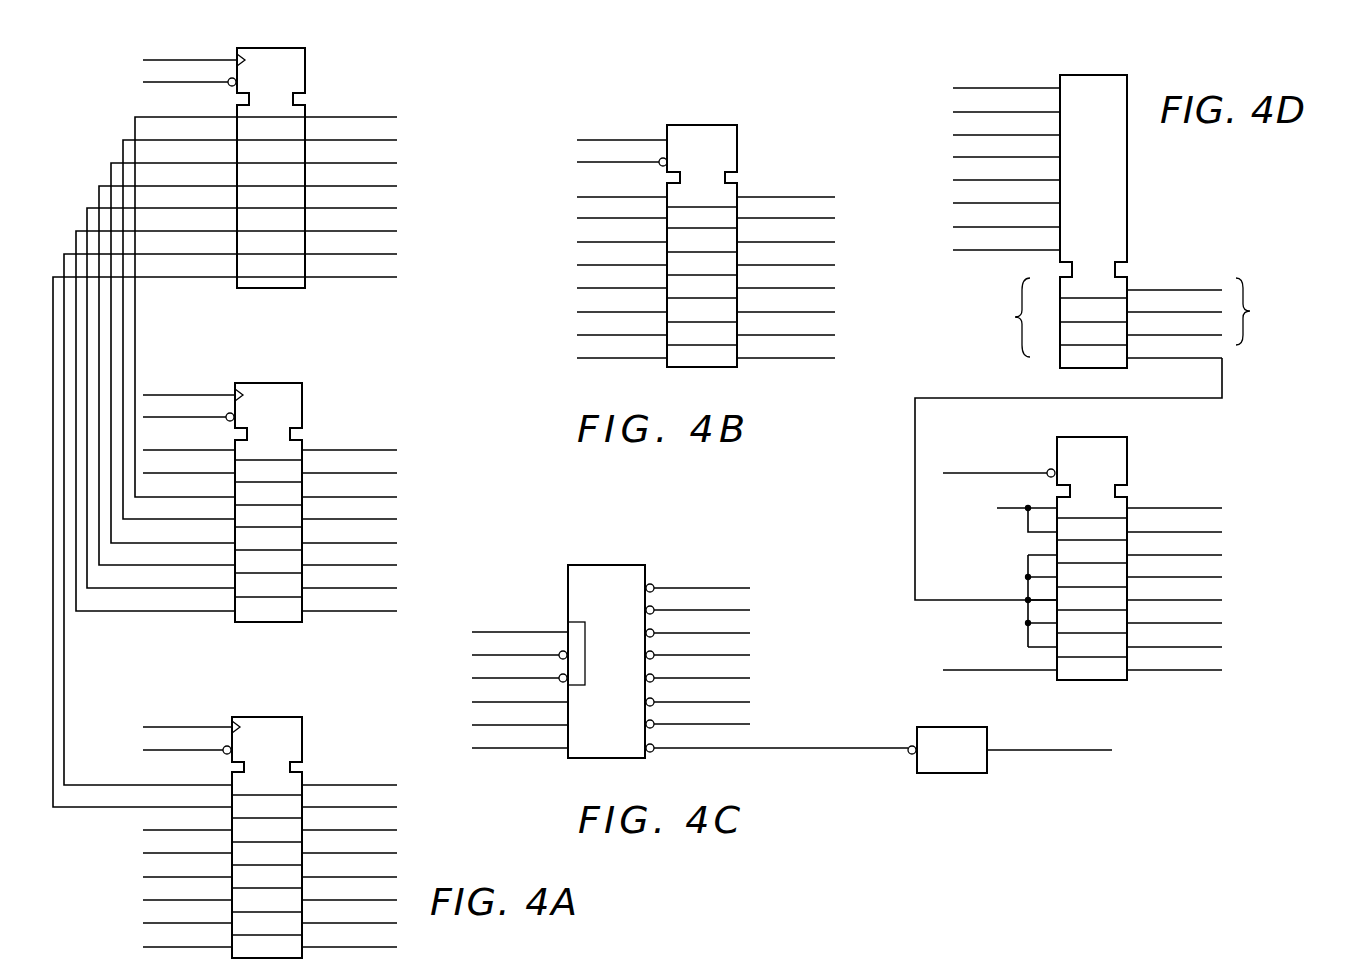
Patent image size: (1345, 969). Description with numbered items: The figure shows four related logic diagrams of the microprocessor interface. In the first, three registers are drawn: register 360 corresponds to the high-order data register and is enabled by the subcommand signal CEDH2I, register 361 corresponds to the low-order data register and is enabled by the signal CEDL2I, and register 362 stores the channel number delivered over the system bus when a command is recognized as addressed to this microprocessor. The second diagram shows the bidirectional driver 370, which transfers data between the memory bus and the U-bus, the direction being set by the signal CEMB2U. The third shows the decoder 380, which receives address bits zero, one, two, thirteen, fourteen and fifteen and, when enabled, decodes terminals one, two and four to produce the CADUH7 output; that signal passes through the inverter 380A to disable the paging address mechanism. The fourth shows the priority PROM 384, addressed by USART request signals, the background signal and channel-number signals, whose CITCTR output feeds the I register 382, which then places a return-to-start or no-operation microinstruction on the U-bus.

In FIG. 4A, the register 360 is at (302, 390).
In FIG. 4A, the register 361 is at (302, 740).
In FIG. 4A, the register 362 is at (305, 66).
In FIG. 4B, the driver 370 is at (737, 142).
In FIG. 4C, the decoder 380 is at (600, 565).
In FIG. 4C, the inverter 380A is at (940, 732).
In FIG. 4D, the register 382 is at (1127, 455).
In FIG. 4D, the PROM 384 is at (1127, 168).